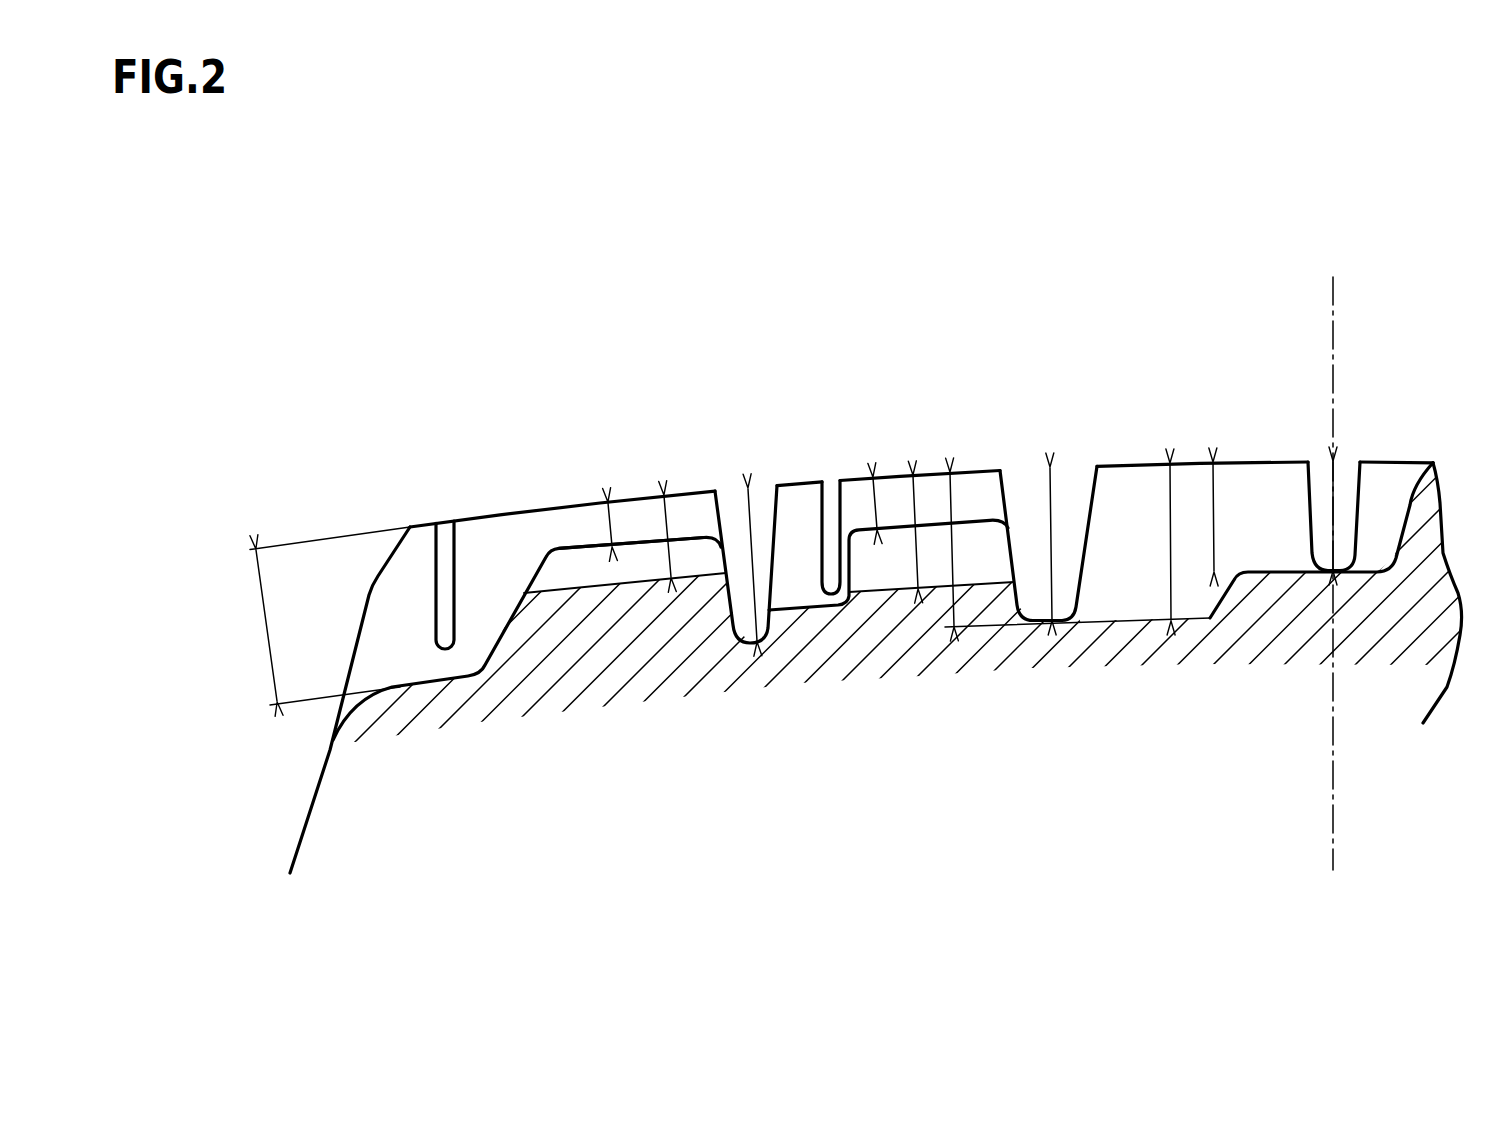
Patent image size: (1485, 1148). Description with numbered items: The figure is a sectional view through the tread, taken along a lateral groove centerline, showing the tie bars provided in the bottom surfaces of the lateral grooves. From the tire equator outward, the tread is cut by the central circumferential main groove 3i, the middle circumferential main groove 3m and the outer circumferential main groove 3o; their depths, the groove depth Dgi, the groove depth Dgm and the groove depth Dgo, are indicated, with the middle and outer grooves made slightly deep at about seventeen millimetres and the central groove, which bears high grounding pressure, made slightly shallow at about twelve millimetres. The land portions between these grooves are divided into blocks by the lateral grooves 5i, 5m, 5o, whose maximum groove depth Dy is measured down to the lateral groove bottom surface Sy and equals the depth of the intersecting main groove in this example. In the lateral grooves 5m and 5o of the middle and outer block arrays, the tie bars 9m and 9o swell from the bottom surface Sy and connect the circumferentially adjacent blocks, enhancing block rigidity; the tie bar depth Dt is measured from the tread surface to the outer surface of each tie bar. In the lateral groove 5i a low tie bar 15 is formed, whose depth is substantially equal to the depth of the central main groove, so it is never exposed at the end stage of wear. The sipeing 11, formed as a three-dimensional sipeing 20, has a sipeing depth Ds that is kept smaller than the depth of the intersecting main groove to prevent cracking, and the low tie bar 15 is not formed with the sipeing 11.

The outer circumferential main groove 3o is at (733, 512).
The middle circumferential main groove 3m is at (1027, 495).
The central circumferential main groove 3i is at (1322, 480).
The lateral groove 5o is at (415, 684).
The lateral groove 5m is at (785, 611).
The lateral groove 5i is at (1122, 620).
The tie bar 9o is at (689, 538).
The tie bar 9m is at (860, 525).
The sipeing 11 is at (591, 590).
The three-dimensional sipeing 20 is at (868, 600).
The low tie bar 15 is at (1257, 573).
The tie bar depth Dt is at (606, 529).
The sipeing depth Ds is at (662, 530).
The maximum groove depth of the lateral groove Dy is at (1143, 363).
The groove depth of the outer circumferential main groove Dgo is at (771, 487).
The groove depth of the middle circumferential main groove Dgm is at (1052, 545).
The groove depth of the central circumferential main groove Dgi is at (1336, 505).
The lateral groove bottom surface Sy is at (447, 684).